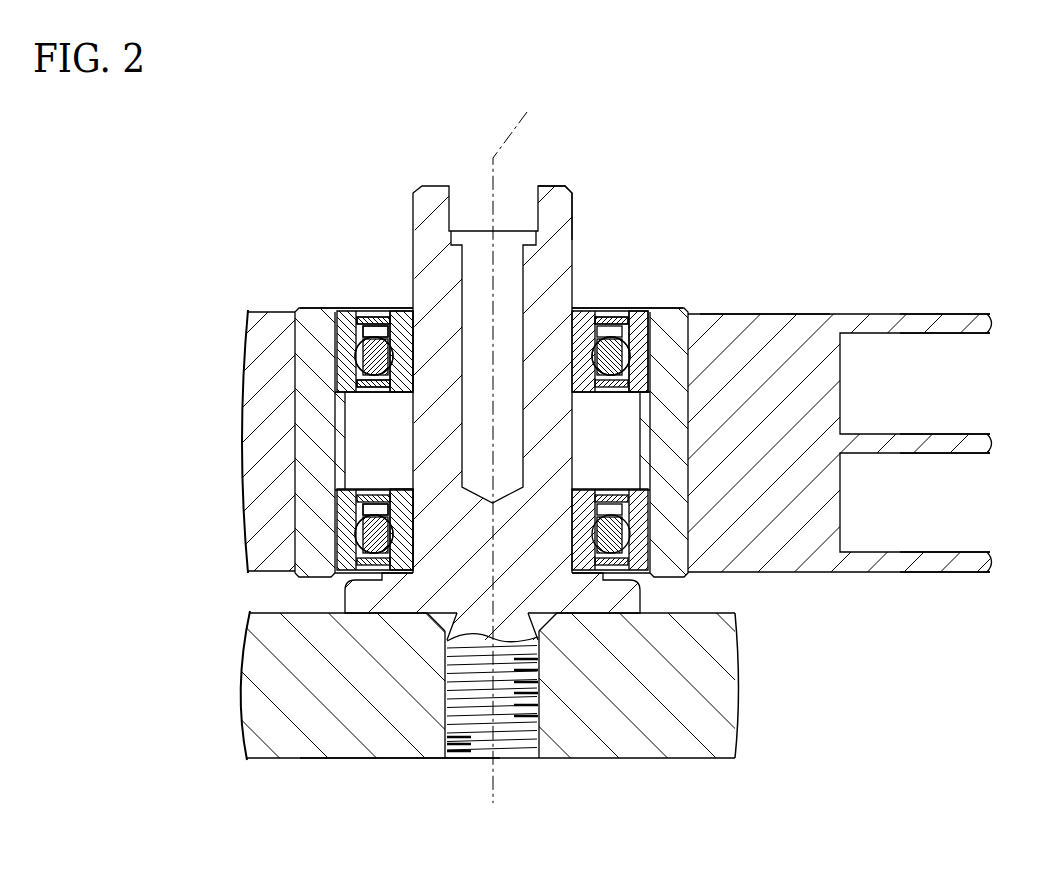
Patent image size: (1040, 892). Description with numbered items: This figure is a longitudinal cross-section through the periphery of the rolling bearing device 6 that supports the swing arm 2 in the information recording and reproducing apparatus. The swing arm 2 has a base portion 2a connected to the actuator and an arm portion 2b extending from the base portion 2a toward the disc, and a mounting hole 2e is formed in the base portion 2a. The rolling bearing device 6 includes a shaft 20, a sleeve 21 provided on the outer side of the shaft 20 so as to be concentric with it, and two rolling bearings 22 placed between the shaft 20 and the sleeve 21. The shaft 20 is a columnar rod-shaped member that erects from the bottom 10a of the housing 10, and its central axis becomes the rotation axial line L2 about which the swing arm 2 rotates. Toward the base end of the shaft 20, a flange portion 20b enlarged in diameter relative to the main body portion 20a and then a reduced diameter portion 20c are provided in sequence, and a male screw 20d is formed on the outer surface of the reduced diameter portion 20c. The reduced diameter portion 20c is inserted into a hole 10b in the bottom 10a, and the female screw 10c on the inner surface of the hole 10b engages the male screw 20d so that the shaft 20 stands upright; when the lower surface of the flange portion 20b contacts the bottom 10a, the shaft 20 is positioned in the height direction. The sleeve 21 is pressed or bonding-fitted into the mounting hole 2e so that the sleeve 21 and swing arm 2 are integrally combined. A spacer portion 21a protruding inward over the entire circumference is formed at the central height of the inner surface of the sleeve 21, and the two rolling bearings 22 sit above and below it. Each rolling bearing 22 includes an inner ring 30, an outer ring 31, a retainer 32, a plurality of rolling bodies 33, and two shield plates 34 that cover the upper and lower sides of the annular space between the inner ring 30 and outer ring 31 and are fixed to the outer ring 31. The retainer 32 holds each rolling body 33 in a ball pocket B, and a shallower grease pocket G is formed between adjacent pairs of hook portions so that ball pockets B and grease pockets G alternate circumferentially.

The swing arm 2 is at (817, 313).
The base portion 2a is at (763, 313).
The arm portion 2b is at (962, 318).
The mounting hole 2e is at (311, 306).
The rolling bearing device 6 is at (667, 229).
The housing 10 is at (247, 681).
The bottom 10a is at (343, 760).
The hole 10b is at (445, 683).
The female screw 10c is at (458, 753).
The shaft 20 is at (550, 188).
The main body portion 20a is at (572, 228).
The flange portion 20b is at (640, 598).
The reduced diameter portion 20c is at (480, 728).
The male screw 20d is at (525, 715).
The sleeve 21 is at (672, 311).
The spacer portion 21a is at (340, 440).
The rolling bearing 22 is at (369, 333).
The inner ring 30 is at (584, 316).
The outer ring 31 is at (641, 316).
The retainer 32 is at (372, 362).
The rolling bodies 33 is at (627, 318).
The shield plates 34 is at (369, 318).
The ball pocket B is at (600, 332).
The grease pocket G is at (331, 342).
The rotation axial line L2 is at (516, 445).